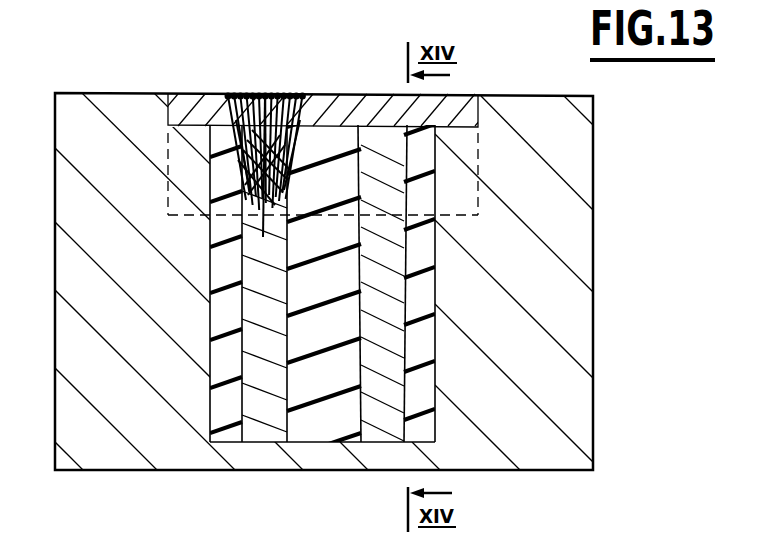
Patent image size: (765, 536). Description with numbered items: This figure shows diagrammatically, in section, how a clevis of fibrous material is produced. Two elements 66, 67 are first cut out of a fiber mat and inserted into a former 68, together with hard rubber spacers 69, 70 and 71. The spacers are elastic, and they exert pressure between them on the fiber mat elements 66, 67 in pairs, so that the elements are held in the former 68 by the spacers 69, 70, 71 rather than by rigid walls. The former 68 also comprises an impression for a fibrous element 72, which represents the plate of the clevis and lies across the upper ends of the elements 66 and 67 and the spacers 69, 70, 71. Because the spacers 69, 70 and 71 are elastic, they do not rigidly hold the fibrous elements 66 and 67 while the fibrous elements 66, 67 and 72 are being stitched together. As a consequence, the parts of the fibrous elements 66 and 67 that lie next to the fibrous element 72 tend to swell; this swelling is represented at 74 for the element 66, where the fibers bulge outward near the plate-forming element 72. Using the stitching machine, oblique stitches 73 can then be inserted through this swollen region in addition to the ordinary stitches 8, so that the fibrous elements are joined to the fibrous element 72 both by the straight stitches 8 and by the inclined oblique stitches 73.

The stitches 8 is at (262, 200).
The fiber mat element 66 is at (268, 348).
The fiber mat element 67 is at (393, 337).
The former 68 is at (570, 236).
The hard rubber spacer 69 is at (228, 443).
The hard rubber spacer 70 is at (323, 423).
The hard rubber spacer 71 is at (420, 378).
The fibrous element 72 is at (320, 112).
The oblique stitches 73 is at (257, 157).
The swelling 74 is at (213, 135).